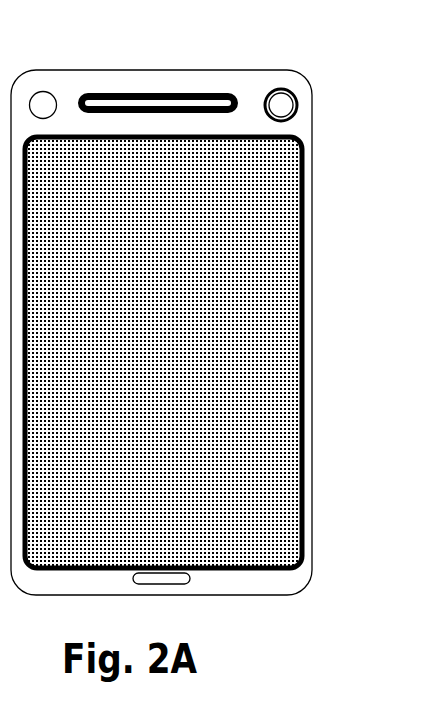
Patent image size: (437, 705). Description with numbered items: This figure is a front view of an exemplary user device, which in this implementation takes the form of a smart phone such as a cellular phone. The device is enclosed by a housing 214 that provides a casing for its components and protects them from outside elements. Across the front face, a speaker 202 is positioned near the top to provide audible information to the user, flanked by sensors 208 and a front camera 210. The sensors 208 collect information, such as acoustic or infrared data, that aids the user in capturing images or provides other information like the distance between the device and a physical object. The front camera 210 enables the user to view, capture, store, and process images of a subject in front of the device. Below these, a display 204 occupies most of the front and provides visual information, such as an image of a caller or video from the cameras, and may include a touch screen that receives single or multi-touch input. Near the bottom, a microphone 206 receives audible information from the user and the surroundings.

The speaker 202 is at (169, 93).
The display 204 is at (248, 137).
The microphone 206 is at (190, 578).
The sensors 208 is at (43, 91).
The front camera 210 is at (281, 88).
The housing 214 is at (312, 513).